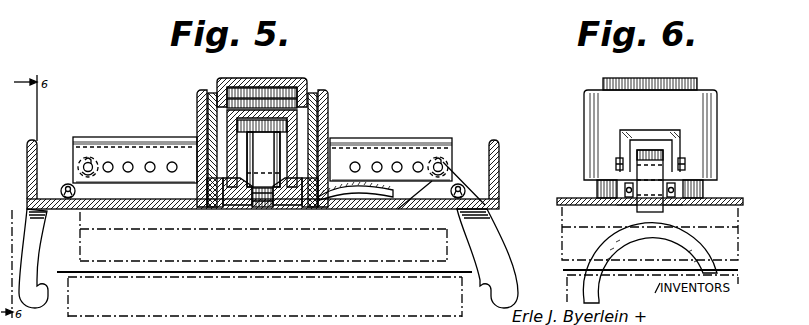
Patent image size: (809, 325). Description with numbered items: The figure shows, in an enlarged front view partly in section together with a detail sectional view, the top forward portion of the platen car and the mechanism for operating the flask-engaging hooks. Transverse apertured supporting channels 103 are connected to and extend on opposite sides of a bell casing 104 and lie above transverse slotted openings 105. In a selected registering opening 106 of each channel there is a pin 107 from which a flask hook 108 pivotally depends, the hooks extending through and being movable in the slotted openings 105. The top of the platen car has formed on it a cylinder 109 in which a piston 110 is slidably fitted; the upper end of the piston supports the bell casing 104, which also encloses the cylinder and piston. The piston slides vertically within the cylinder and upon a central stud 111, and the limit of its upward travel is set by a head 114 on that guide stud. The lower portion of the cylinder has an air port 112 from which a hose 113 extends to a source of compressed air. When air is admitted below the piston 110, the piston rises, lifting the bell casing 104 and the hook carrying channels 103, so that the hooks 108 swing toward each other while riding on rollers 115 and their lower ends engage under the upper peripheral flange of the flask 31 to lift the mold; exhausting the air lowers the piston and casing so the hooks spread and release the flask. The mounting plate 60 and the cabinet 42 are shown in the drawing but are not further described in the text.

In FIG. 5, the flask 31 is at (362, 290).
In FIG. 6, the flask 31 is at (566, 287).
In FIG. 5, the cabinet 42 is at (110, 263).
In FIG. 6, the cabinet 42 is at (562, 237).
In FIG. 5, the mounting plate 60 is at (499, 163).
In FIG. 6, the mounting plate 60 is at (732, 198).
In FIG. 5, the apertured supporting channels 103 is at (148, 145).
In FIG. 6, the apertured supporting channels 103 is at (655, 138).
In FIG. 5, the bell casing 104 is at (279, 79).
In FIG. 6, the bell casing 104 is at (598, 93).
In FIG. 5, the slotted openings 105 is at (176, 203).
In FIG. 6, the slotted openings 105 is at (668, 205).
In FIG. 5, the registering opening 106 is at (146, 163).
In FIG. 5, the pin 107 is at (84, 158).
In FIG. 6, the pin 107 is at (686, 165).
In FIG. 5, the flask hook 108 is at (40, 240).
In FIG. 6, the flask hook 108 is at (623, 234).
In FIG. 5, the cylinder 109 is at (210, 192).
In FIG. 6, the cylinder 109 is at (598, 186).
In FIG. 5, the piston 110 is at (228, 196).
In FIG. 5, the central stud 111 is at (262, 138).
In FIG. 6, the central stud 111 is at (650, 181).
In FIG. 5, the air port 112 is at (312, 198).
In FIG. 5, the hose 113 is at (388, 198).
In FIG. 5, the head 114 is at (296, 128).
In FIG. 5, the rollers 115 is at (68, 184).
In FIG. 6, the rollers 115 is at (668, 198).